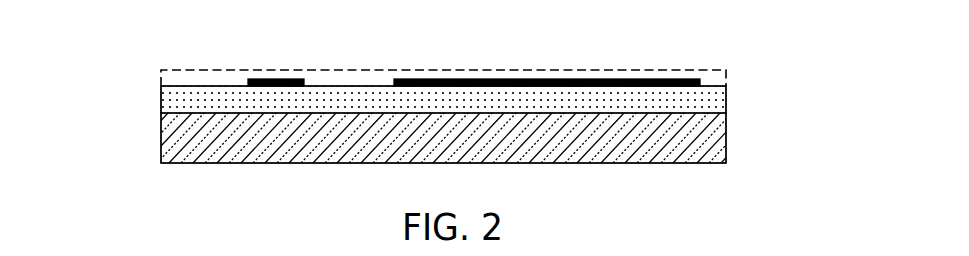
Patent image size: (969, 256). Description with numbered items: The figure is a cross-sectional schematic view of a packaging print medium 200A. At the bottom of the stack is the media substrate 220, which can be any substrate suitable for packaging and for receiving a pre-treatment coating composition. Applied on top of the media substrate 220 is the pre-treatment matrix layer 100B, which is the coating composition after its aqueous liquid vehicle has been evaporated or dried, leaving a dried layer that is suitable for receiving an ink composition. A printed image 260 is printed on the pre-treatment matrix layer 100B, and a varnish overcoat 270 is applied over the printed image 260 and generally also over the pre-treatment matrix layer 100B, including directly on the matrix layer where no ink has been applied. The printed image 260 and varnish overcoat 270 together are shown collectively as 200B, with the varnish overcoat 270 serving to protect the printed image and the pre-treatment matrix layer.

The packaging print medium 200A is at (150, 88).
The printed image and varnish overcoat 200B is at (213, 43).
The pre-treatment matrix layer 100B is at (712, 99).
The media substrate 220 is at (712, 146).
The varnish overcoat 270 is at (362, 77).
The printed image 260 is at (588, 80).